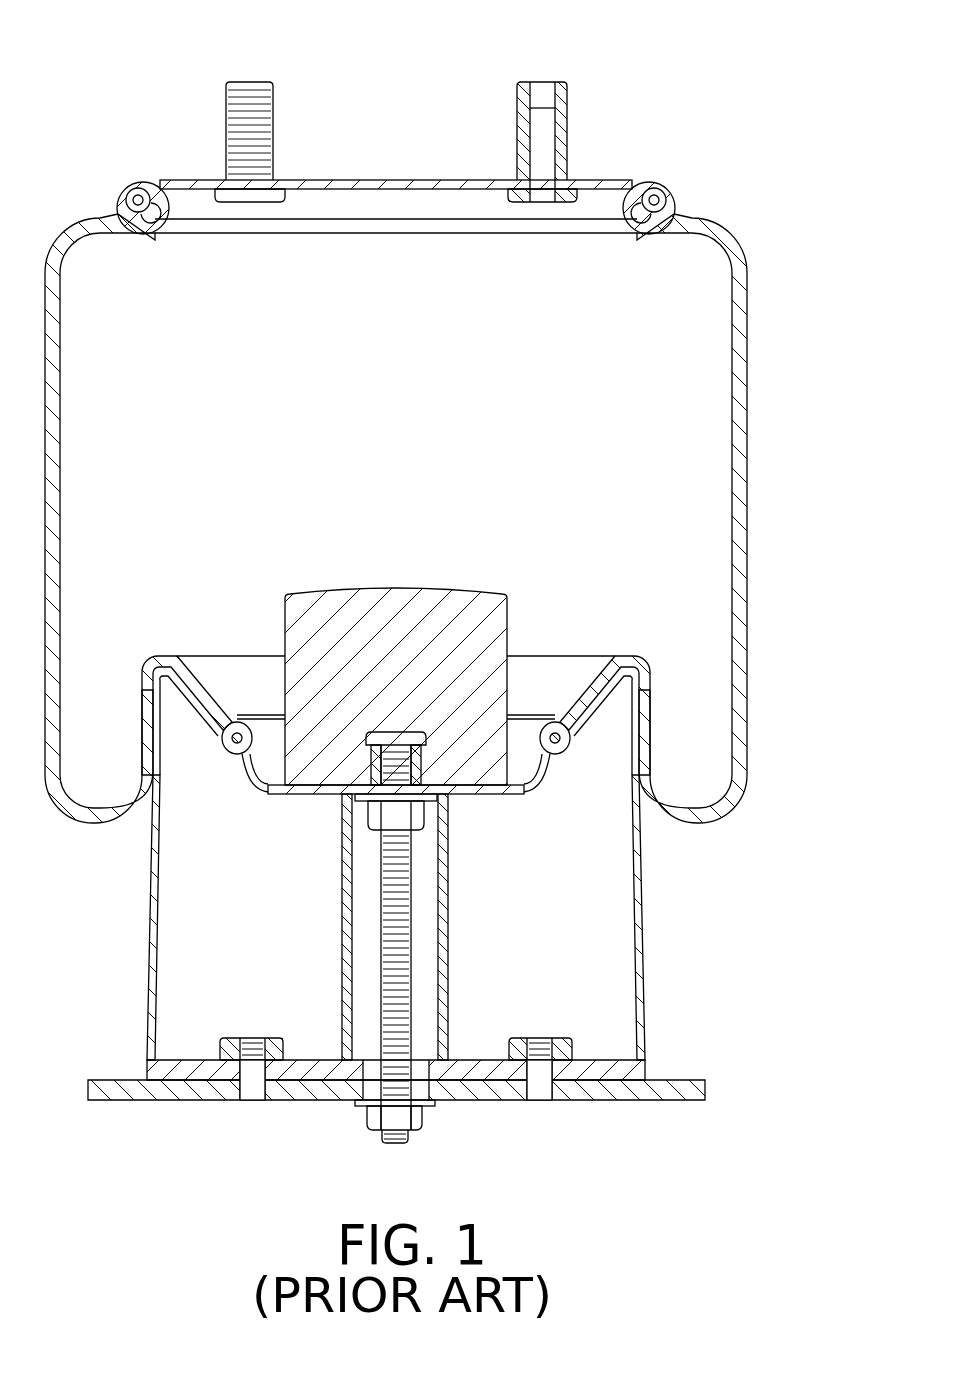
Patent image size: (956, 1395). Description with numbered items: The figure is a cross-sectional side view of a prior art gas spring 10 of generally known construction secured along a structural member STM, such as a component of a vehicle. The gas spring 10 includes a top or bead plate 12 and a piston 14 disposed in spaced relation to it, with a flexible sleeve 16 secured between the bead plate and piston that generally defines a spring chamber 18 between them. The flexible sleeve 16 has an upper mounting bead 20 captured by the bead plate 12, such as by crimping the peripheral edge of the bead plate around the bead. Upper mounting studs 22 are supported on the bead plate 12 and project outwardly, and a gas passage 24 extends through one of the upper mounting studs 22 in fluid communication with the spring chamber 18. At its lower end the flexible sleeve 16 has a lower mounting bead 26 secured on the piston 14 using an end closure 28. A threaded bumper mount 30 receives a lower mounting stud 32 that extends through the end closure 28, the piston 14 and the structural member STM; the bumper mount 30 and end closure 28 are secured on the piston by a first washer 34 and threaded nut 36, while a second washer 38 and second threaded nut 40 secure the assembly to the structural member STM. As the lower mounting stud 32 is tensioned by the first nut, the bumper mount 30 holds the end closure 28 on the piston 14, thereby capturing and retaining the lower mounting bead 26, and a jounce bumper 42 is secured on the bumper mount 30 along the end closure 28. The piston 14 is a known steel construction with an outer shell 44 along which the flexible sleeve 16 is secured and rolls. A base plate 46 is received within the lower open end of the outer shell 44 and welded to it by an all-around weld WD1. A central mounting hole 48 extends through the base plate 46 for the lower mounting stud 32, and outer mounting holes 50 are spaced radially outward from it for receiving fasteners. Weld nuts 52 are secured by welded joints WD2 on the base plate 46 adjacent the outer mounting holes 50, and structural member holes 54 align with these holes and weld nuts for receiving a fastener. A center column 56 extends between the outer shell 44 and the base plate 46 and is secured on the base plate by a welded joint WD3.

The gas spring 10 is at (768, 282).
The bead plate 12 is at (360, 176).
The piston 14 is at (658, 948).
The flexible sleeve 16 is at (755, 510).
The spring chamber 18 is at (378, 405).
The upper mounting bead 20 is at (134, 195).
The upper mounting studs 22 is at (232, 116).
The gas passage 24 is at (545, 84).
The lower mounting bead 26 is at (557, 747).
The end closure 28 is at (257, 700).
The threaded bumper mount 30 is at (418, 720).
The lower mounting stud 32 is at (422, 894).
The first washer 34 is at (426, 808).
The threaded nut 36 is at (376, 811).
The second washer 38 is at (424, 1108).
The second threaded nut 40 is at (372, 1122).
The jounce bumper 42 is at (435, 578).
The outer shell 44 is at (642, 906).
The base plate 46 is at (614, 1060).
The central mounting hole 48 is at (376, 1092).
The outer mounting holes 50 is at (253, 1090).
The weld nuts 52 is at (237, 1038).
The structural member holes 54 is at (538, 1092).
The center column 56 is at (452, 982).
The structural member STM is at (165, 1086).
The all-around weld WD1 is at (645, 1078).
The welded joints WD2 is at (290, 1056).
The welded joint WD3 is at (454, 1060).